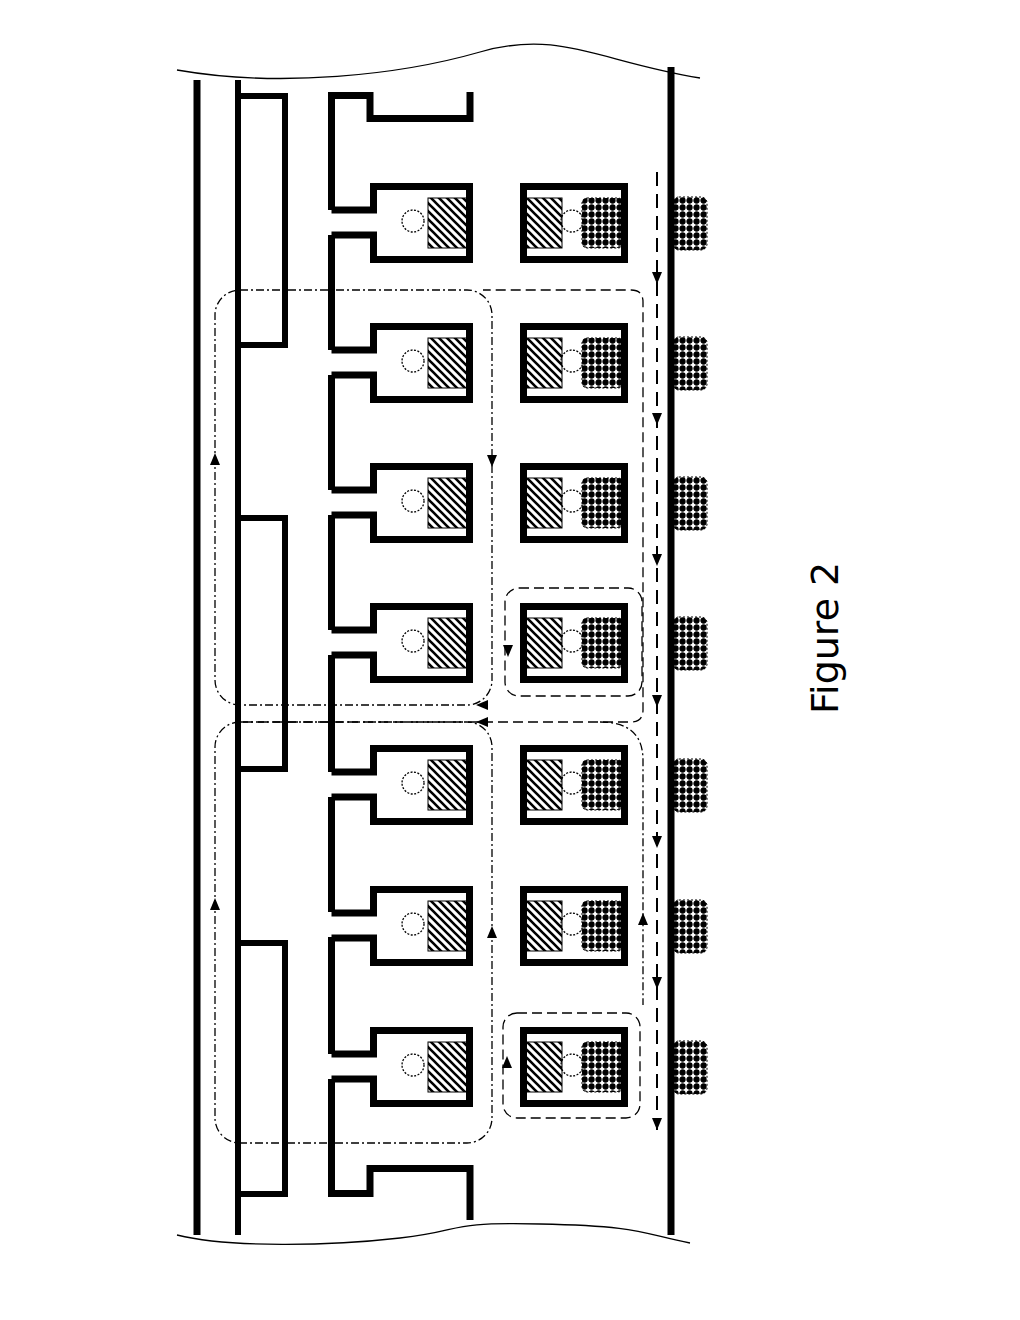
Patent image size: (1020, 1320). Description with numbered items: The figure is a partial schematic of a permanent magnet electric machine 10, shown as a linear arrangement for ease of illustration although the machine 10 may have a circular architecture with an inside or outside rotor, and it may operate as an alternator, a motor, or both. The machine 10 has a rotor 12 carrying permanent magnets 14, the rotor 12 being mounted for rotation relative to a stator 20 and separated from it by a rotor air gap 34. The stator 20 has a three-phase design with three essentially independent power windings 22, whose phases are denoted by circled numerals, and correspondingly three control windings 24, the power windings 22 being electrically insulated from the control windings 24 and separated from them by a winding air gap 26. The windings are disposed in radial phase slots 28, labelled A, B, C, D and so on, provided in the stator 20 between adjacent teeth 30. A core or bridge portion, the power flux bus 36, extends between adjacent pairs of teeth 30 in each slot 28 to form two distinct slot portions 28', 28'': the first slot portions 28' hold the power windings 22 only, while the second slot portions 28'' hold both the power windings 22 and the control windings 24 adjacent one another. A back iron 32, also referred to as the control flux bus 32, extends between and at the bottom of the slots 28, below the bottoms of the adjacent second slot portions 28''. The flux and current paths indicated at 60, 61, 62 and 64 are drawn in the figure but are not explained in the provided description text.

The permanent magnet electric machine 10 is at (170, 1220).
The rotor 12 is at (196, 145).
The permanent magnets 14 is at (258, 145).
The stator 20 is at (380, 105).
The power winding 22 is at (550, 187).
The control winding 24 is at (693, 180).
The winding air gap 26 is at (570, 1093).
The radial phase slot 28 is at (347, 1208).
The first slot portion 28' is at (373, 1208).
The second slot portion 28'' is at (564, 750).
The tooth 30 is at (383, 1093).
The back iron 32 is at (640, 1125).
The rotor air gap 34 is at (308, 145).
The power flux bus 36 is at (480, 1080).
The magnetic flux loop 60 is at (455, 1143).
The armature flux loop 61 is at (610, 288).
The current path 62 is at (580, 1122).
The return path 64 is at (673, 1123).